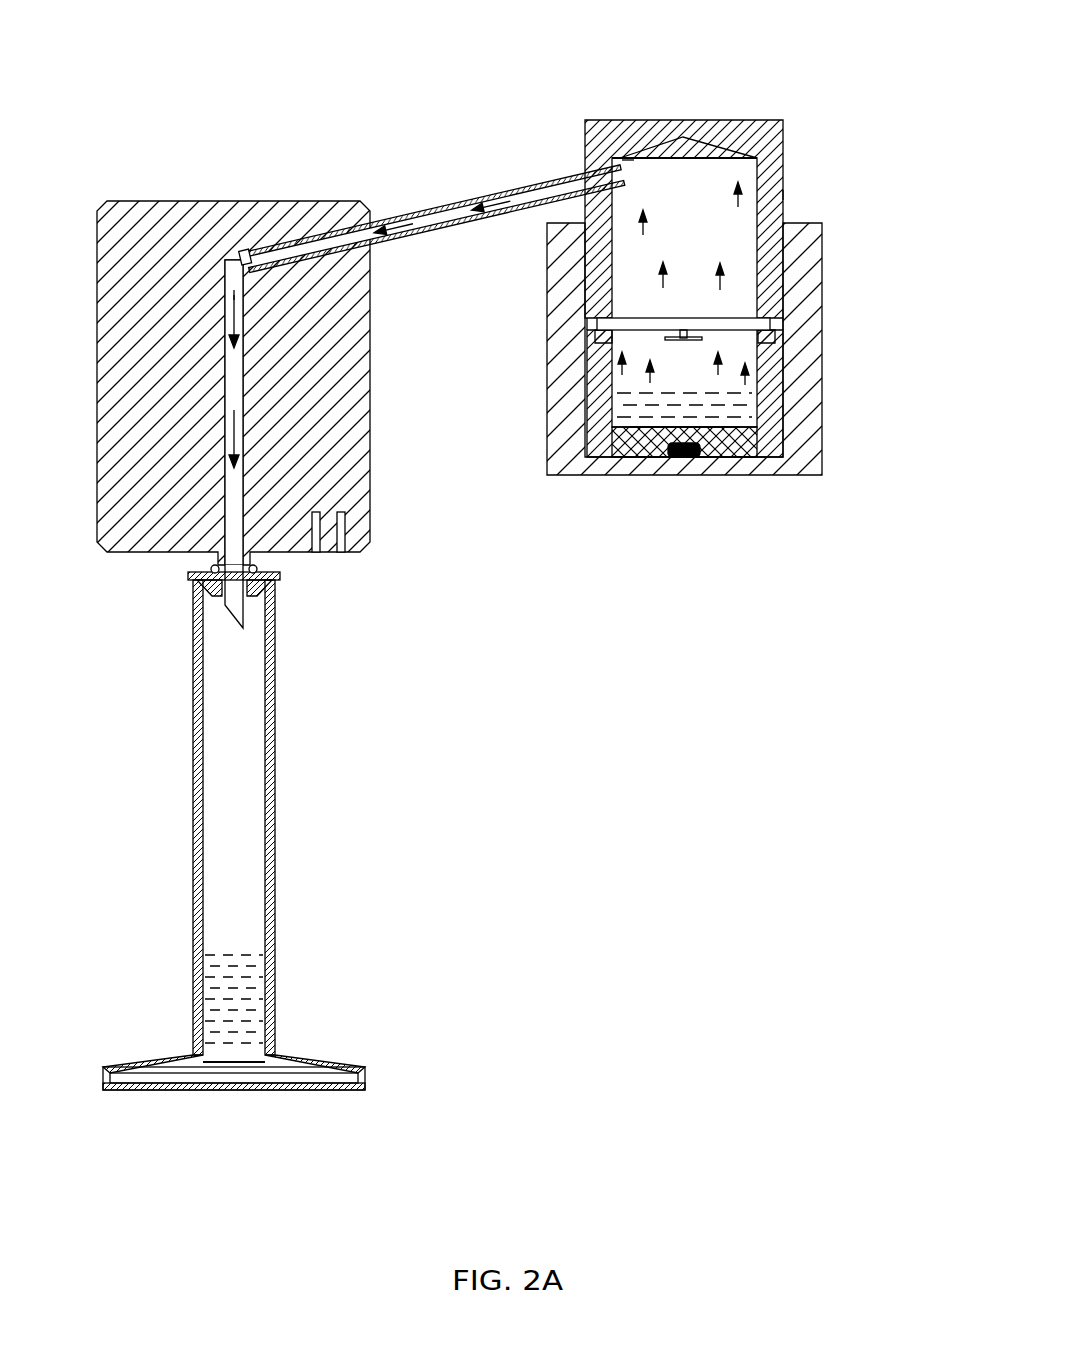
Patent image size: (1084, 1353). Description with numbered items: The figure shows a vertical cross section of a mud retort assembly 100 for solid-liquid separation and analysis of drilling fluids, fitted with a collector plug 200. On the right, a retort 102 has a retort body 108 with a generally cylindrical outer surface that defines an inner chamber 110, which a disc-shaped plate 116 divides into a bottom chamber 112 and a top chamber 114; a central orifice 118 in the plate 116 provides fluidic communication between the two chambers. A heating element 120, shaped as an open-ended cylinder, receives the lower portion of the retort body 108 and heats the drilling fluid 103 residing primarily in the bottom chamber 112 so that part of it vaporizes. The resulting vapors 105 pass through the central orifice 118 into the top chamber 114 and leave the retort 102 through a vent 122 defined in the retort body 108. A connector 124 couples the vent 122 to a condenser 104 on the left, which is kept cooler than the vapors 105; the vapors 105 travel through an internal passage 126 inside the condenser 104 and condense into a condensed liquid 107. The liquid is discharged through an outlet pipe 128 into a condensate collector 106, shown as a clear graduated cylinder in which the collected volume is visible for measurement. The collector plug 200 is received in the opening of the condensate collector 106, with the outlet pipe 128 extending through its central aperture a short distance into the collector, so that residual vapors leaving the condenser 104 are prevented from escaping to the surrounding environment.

The mud retort assembly 100 is at (874, 42).
The retort 102 is at (814, 194).
The drilling fluid 103 is at (652, 420).
The condenser 104 is at (372, 465).
The vapors 105 is at (225, 303).
The condensate collector 106 is at (276, 792).
The condensed liquid 107 is at (262, 990).
The retort body 108 is at (785, 148).
The inner chamber 110 is at (763, 278).
The bottom chamber 112 is at (703, 377).
The top chamber 114 is at (703, 243).
The plate 116 is at (736, 330).
The central orifice 118 is at (680, 460).
The heating element 120 is at (822, 398).
The vent 122 is at (638, 152).
The connector 124 is at (423, 205).
The internal passage 126 is at (246, 372).
The outlet pipe 128 is at (258, 610).
The collector plug 200 is at (290, 576).